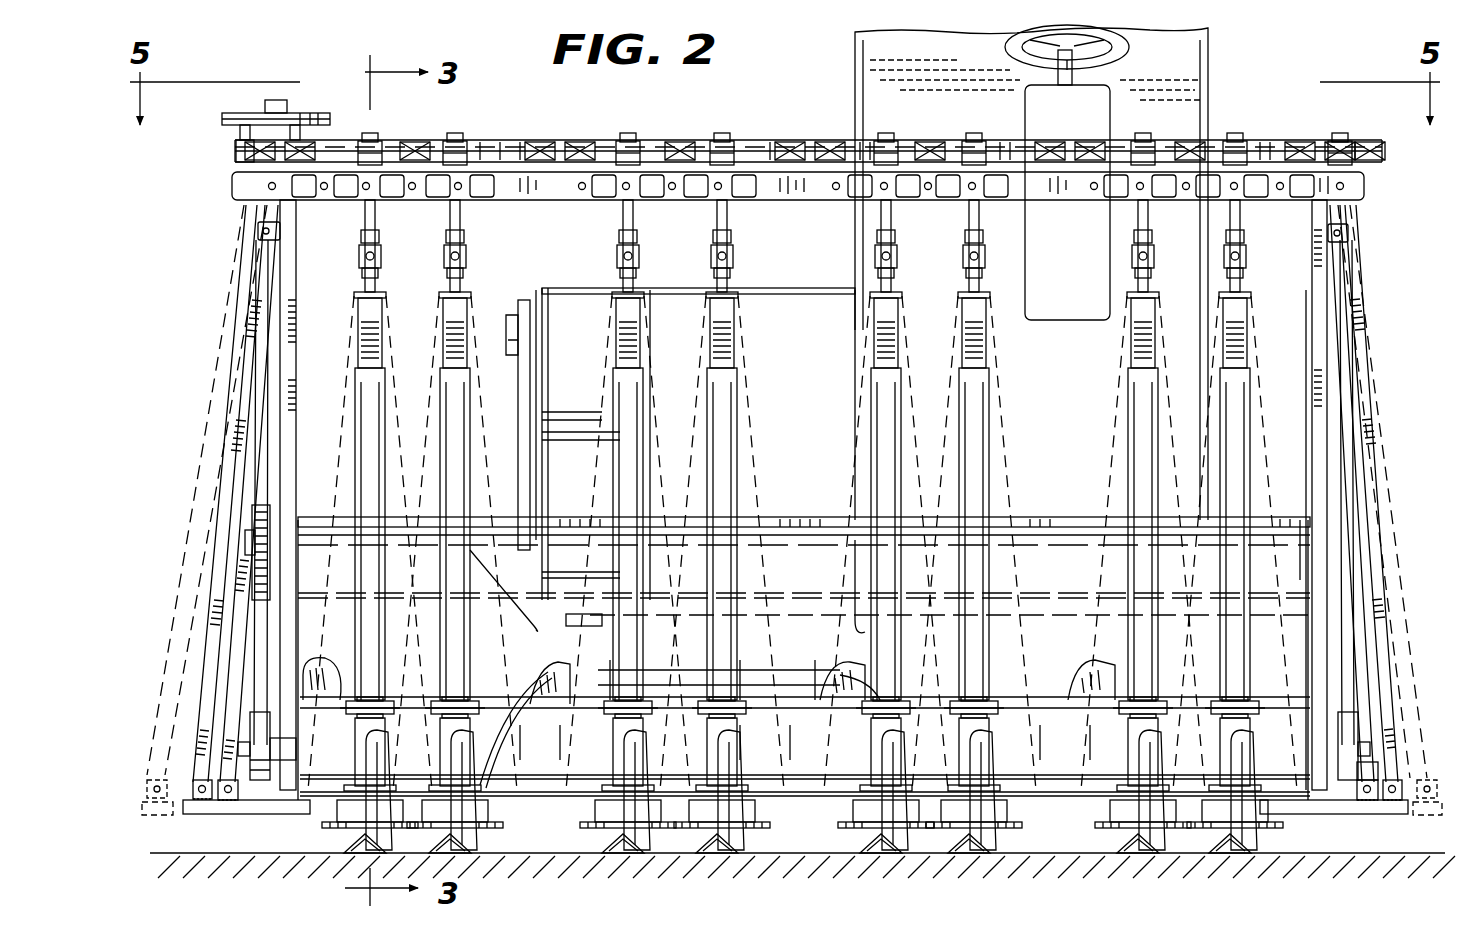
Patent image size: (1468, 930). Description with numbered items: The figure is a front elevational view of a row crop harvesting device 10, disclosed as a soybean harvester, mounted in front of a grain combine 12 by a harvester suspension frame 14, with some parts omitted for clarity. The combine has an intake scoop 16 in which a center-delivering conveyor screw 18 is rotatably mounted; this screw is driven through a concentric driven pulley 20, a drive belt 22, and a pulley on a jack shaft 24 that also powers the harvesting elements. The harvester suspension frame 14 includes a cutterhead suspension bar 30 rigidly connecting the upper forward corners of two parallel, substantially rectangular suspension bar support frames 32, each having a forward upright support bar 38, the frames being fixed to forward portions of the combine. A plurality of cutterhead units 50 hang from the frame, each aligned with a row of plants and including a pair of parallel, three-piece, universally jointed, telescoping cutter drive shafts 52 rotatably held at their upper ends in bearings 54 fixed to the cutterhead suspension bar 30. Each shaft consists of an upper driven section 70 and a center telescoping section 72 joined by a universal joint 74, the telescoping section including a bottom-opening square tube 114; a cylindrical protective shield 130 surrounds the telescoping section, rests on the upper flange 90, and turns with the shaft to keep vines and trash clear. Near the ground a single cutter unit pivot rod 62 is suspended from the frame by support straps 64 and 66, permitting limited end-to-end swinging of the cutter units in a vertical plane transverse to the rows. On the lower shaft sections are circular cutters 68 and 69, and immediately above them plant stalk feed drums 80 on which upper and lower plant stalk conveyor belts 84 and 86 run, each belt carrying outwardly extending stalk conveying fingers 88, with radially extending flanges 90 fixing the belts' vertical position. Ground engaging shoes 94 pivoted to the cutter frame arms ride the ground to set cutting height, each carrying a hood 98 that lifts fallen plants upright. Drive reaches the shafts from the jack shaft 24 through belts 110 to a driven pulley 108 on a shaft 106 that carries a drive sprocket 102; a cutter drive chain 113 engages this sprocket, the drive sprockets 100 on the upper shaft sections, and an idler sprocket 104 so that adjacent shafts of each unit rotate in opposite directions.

The row crop harvesting device 10 is at (1378, 275).
The grain combine 12 is at (850, 90).
The harvester suspension frame 14 is at (548, 206).
The intake scoop 16 is at (310, 562).
The center-delivering conveyor screw 18 is at (553, 697).
The driven pulley 20 is at (248, 732).
The drive belt 22 is at (258, 680).
The jack shaft 24 is at (250, 536).
The cutterhead suspension bar 30 is at (232, 186).
The suspension bar support frame 32 is at (1298, 232).
The forward upright support bar 38 is at (262, 320).
The cutterhead unit 50 is at (300, 826).
The cutter drive shaft 52 is at (708, 318).
The bearing 54 is at (452, 203).
The cutter unit pivot rod 62 is at (537, 808).
The cutter unit pivot rod support strap 64 is at (1386, 680).
The cutter unit pivot rod support strap 66 is at (1362, 714).
The circular cutter 68 is at (497, 847).
The circular cutter 69 is at (334, 828).
The upper driven section 70 is at (1150, 168).
The center telescoping section 72 is at (733, 286).
The universal joint 74 is at (963, 260).
The plant stalk feed drum 80 is at (368, 722).
The upper plant stalk conveyor belt 84 is at (462, 704).
The lower plant stalk conveyor belt 86 is at (374, 702).
The stalk conveying finger 88 is at (1240, 702).
The radially extending flange 90 is at (724, 698).
The ground engaging shoe 94 is at (640, 853).
The hood 98 is at (900, 756).
The drive sprocket 100 is at (373, 140).
The drive sprocket 102 is at (238, 151).
The idler sprocket 104 is at (1383, 150).
The shaft 106 is at (278, 100).
The driven pulley 108 is at (240, 113).
The belt 110 is at (332, 120).
The cutter drive chain 113 is at (772, 142).
The square tube 114 is at (452, 325).
The cylindrical protective shield 130 is at (886, 396).